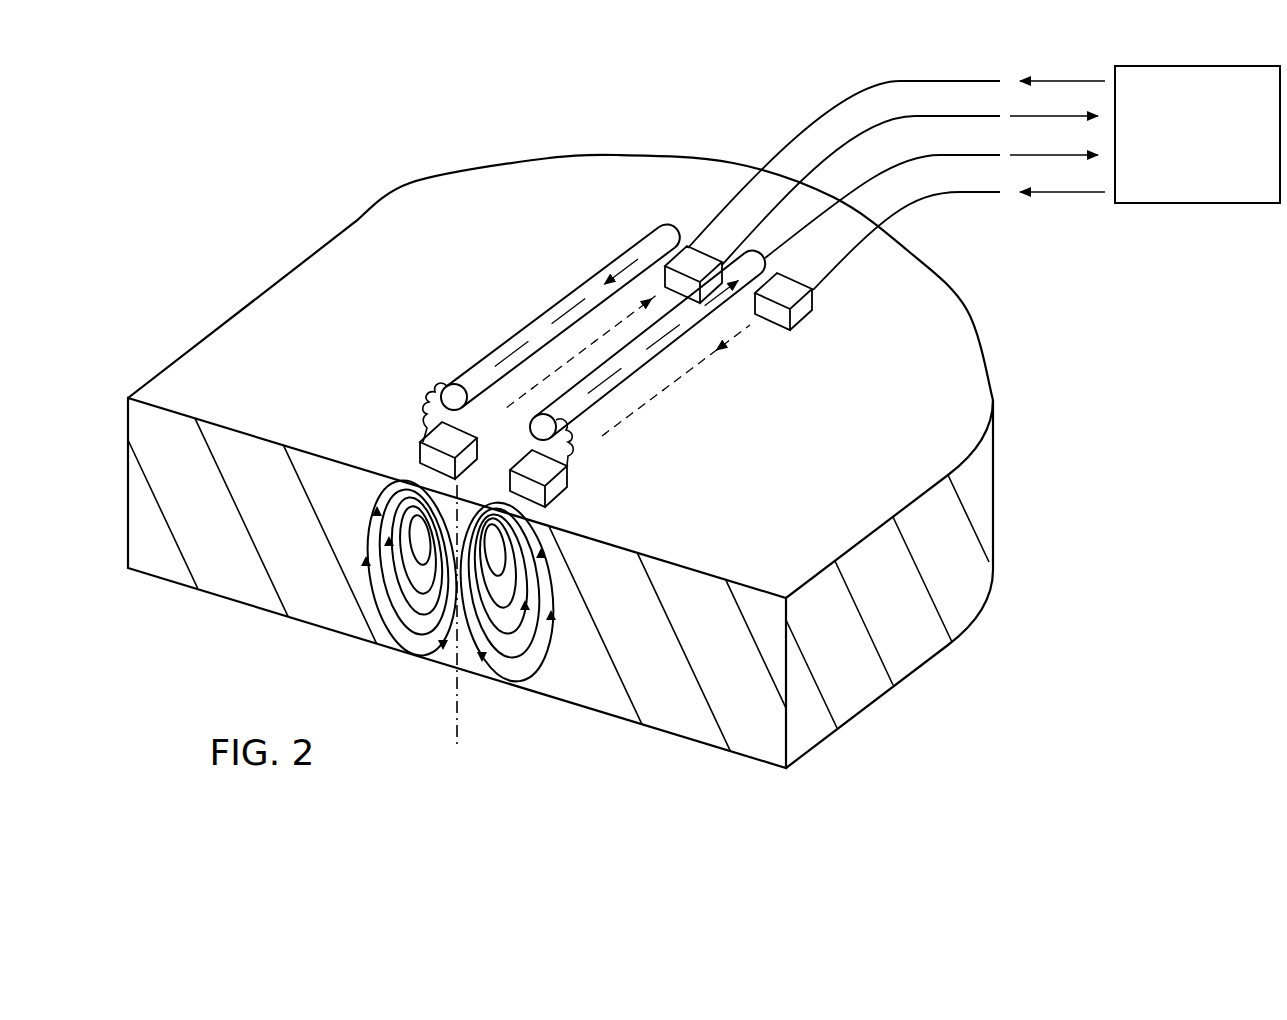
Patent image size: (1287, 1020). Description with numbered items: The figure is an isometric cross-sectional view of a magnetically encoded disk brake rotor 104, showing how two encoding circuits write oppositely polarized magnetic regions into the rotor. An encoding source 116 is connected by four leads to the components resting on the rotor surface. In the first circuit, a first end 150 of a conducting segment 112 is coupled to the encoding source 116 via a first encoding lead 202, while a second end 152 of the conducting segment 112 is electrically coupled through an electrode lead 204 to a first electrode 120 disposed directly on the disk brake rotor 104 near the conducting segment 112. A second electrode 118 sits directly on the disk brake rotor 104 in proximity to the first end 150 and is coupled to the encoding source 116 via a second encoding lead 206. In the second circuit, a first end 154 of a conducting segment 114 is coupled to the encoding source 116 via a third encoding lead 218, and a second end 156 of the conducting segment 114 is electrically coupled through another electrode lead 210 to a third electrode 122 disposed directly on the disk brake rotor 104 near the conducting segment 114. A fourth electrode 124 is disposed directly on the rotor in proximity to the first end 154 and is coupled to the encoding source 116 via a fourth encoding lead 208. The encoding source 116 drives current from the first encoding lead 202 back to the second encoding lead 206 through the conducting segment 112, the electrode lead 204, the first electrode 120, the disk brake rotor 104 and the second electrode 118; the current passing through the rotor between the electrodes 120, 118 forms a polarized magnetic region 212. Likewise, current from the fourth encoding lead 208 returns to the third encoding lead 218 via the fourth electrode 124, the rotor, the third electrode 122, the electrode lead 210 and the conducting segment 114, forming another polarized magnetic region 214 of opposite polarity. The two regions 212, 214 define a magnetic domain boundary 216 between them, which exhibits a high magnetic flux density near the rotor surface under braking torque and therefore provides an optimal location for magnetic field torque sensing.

The disk brake rotor 104 is at (804, 494).
The conducting segment 112 is at (532, 322).
The conducting segment 114 is at (688, 342).
The encoding source 116 is at (1181, 180).
The second electrode 118 is at (693, 246).
The first electrode 120 is at (467, 456).
The third electrode 122 is at (553, 478).
The fourth electrode 124 is at (803, 305).
The first end of conducting segment 112 150 is at (666, 228).
The second end of conducting segment 112 152 is at (462, 384).
The first end of conducting segment 114 154 is at (768, 262).
The second end of conducting segment 114 156 is at (530, 428).
The first encoding lead 202 is at (792, 143).
The electrode lead 204 is at (422, 402).
The second encoding lead 206 is at (833, 152).
The fourth encoding lead 208 is at (975, 193).
The electrode lead 210 is at (583, 455).
The polarized magnetic region 212 is at (344, 601).
The polarized magnetic region 214 is at (560, 665).
The magnetic domain boundary 216 is at (456, 697).
The third encoding lead 218 is at (940, 157).